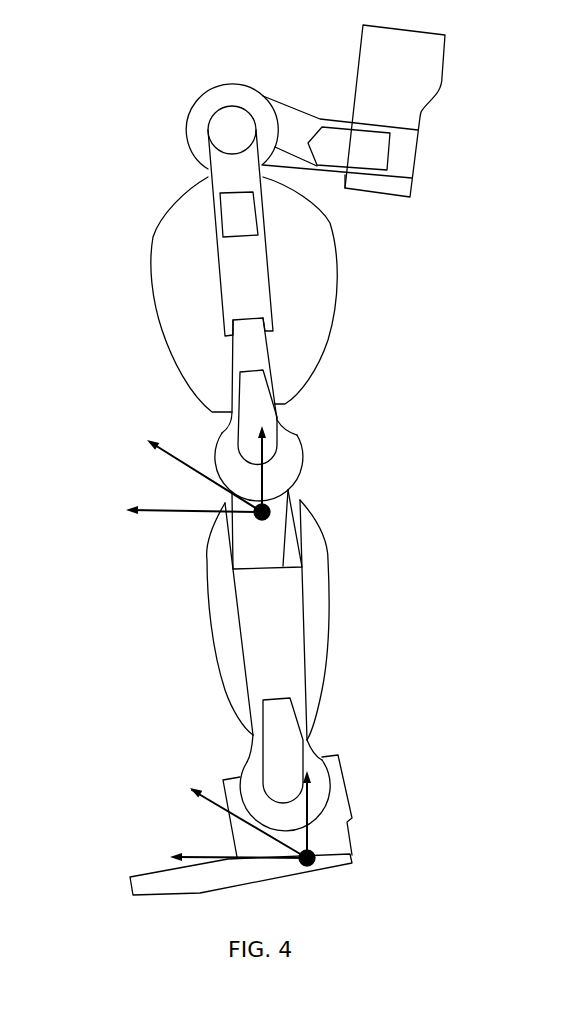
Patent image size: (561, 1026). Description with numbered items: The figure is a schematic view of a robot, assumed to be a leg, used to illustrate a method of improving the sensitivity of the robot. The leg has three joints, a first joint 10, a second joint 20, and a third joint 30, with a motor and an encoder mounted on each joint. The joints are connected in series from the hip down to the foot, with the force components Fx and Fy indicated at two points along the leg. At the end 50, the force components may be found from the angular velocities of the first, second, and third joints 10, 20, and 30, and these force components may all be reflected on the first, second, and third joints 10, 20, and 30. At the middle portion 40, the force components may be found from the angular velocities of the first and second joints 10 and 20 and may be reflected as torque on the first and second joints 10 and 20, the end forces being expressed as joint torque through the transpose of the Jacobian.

The first joint 10 is at (223, 123).
The second joint 20 is at (270, 438).
The third joint 30 is at (282, 787).
The middle portion 40 is at (272, 515).
The end 50 is at (315, 856).